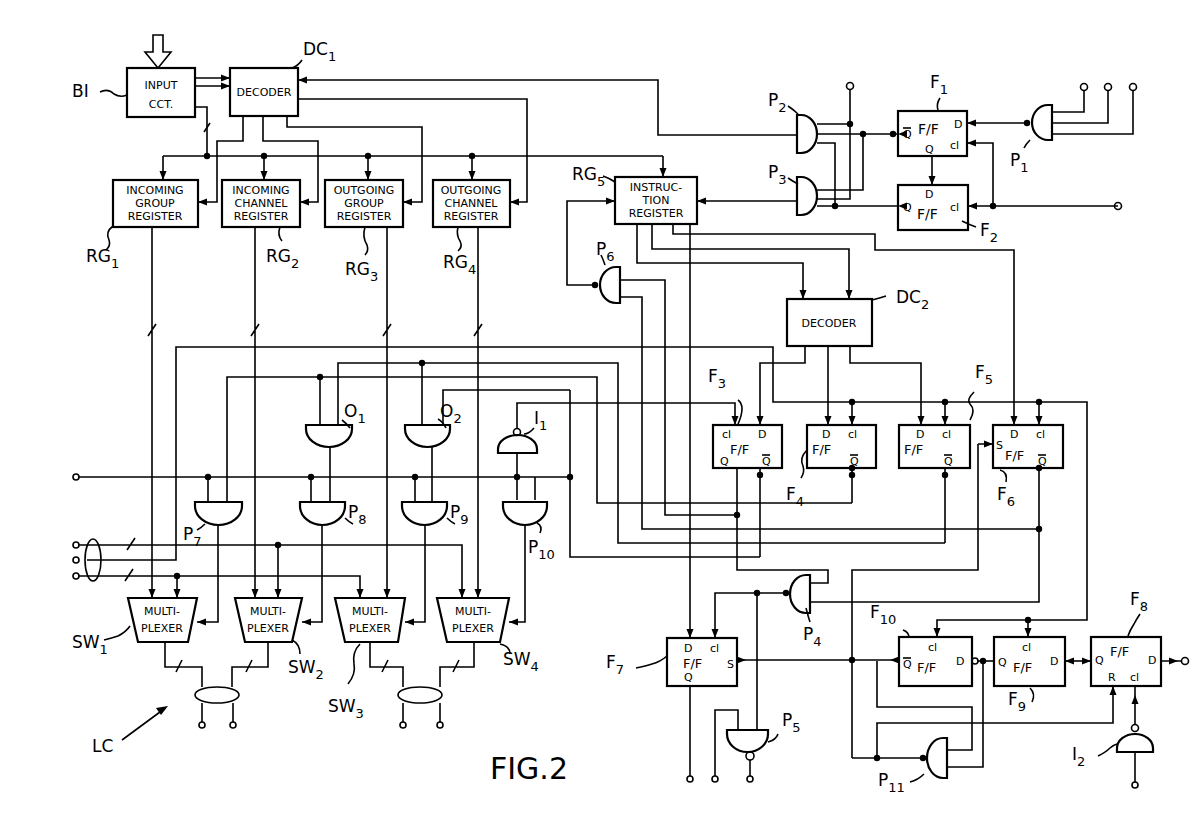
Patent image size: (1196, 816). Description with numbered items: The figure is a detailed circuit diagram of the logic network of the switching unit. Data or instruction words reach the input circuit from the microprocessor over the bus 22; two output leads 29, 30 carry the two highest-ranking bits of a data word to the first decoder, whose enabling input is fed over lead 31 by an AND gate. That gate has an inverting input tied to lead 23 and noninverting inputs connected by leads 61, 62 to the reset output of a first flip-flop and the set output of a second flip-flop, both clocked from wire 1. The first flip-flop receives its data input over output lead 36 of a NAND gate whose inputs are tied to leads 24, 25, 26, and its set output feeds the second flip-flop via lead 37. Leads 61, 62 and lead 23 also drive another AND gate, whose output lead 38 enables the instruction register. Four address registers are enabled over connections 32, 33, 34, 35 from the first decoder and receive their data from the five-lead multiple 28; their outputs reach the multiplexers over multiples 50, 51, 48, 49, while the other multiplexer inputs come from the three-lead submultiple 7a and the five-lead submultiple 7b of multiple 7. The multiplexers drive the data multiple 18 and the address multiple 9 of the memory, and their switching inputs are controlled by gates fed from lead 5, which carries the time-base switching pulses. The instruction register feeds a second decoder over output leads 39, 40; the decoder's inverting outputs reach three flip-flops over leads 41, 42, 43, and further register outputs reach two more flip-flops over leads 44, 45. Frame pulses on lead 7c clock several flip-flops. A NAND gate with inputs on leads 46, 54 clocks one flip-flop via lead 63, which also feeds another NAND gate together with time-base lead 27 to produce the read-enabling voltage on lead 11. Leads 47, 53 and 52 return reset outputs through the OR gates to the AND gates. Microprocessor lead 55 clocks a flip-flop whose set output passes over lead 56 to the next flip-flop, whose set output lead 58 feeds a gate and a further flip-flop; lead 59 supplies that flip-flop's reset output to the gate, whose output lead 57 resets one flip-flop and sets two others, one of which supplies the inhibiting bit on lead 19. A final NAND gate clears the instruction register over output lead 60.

The wire 1 is at (1090, 210).
The lead 5 is at (108, 478).
The multiple 7 is at (93, 581).
The 3-lead submultiple 7a is at (102, 582).
The 5-lead submultiple 7b is at (112, 540).
The lead 7c is at (176, 438).
The address multiple 9 is at (420, 703).
The lead 11 is at (753, 770).
The data multiple 18 is at (217, 703).
The lead 19 is at (684, 744).
The bus 22 is at (163, 44).
The lead 23 is at (853, 100).
The lead 24 is at (1076, 76).
The lead 25 is at (1103, 84).
The lead 26 is at (1134, 84).
The output lead 27 is at (714, 740).
The 5-lead multiple 28 is at (200, 144).
The output lead 29 is at (207, 74).
The output lead 30 is at (211, 87).
The lead 31 is at (658, 112).
The connection line 32 is at (210, 208).
The connection line 33 is at (312, 208).
The connection line 34 is at (417, 208).
The connection line 35 is at (522, 208).
The output lead 36 is at (1012, 120).
The lead 37 is at (935, 172).
The output lead 38 is at (740, 200).
The output lead 39 is at (760, 268).
The output lead 40 is at (849, 268).
The lead 41 is at (790, 368).
The lead 42 is at (828, 380).
The lead 43 is at (913, 364).
The lead 44 is at (1014, 270).
The lead 45 is at (690, 318).
The lead 46 is at (732, 490).
The lead 47 is at (608, 562).
The multiple 48 is at (387, 288).
The multiple 49 is at (478, 288).
The multiple 50 is at (152, 312).
The multiple 51 is at (255, 312).
The lead 52 is at (278, 380).
The lead 53 is at (336, 363).
The lead 54 is at (1010, 533).
The output lead 55 is at (1138, 772).
The lead 56 is at (1078, 668).
The output lead 57 is at (850, 687).
The lead 58 is at (984, 760).
The lead 59 is at (875, 682).
The output lead 60 is at (567, 236).
The lead 61 is at (872, 138).
The lead 62 is at (878, 210).
The lead 63 is at (768, 597).